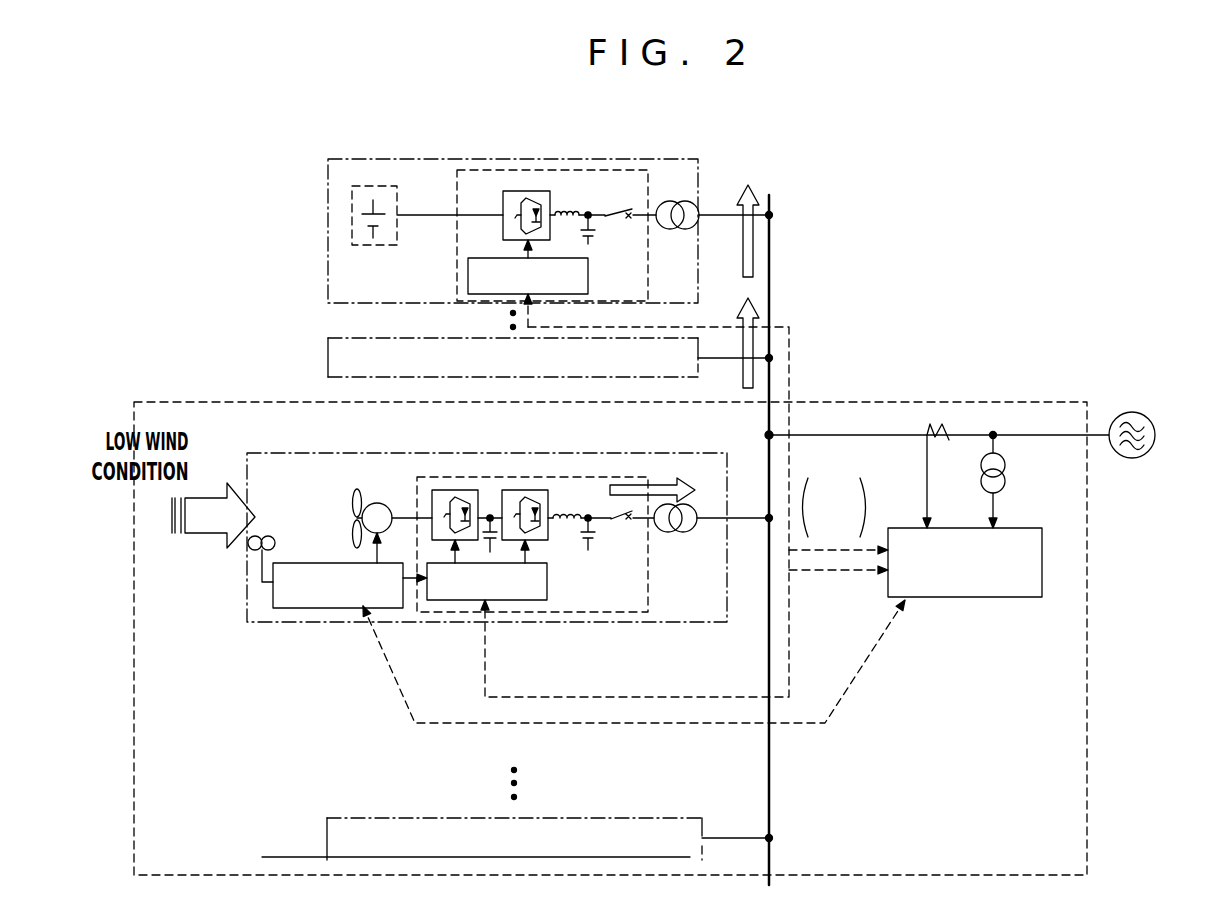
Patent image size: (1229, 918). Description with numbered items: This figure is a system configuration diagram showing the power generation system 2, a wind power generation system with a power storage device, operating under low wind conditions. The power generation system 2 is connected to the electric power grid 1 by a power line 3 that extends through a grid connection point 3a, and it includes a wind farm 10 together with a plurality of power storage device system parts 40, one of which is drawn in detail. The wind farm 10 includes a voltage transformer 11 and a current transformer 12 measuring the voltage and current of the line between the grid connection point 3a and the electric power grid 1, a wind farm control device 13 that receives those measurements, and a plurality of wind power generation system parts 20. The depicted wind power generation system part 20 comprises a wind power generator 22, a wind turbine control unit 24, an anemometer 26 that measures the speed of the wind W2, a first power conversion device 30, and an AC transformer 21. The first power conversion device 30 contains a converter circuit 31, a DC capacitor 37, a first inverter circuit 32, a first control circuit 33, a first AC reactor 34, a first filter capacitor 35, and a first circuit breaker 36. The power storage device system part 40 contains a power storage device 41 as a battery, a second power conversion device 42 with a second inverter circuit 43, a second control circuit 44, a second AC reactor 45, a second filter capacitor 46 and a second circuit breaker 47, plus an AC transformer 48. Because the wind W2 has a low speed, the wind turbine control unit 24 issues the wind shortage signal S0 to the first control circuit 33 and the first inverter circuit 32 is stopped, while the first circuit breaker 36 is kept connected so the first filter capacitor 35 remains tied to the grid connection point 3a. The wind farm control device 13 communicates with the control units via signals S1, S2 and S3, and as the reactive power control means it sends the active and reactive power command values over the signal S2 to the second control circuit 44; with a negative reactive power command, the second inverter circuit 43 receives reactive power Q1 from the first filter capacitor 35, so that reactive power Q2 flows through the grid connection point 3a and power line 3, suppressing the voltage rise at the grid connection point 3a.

The electric power grid 1 is at (1156, 437).
The power generation system 2 is at (1049, 208).
The power line 3 is at (771, 372).
The grid connection point 3a is at (773, 432).
The wind farm 10 is at (1089, 614).
The voltage transformer 11 is at (1006, 464).
The current transformer 12 is at (949, 440).
The wind farm control device 13 is at (962, 598).
The wind power generation system part 20 is at (289, 624).
The AC transformer 21 is at (680, 533).
The wind power generator 22 is at (378, 502).
The wind turbine control unit 24 is at (338, 609).
The anemometer 26 is at (271, 535).
The first power conversion device 30 is at (548, 613).
The converter circuit 31 is at (455, 490).
The first inverter circuit 32 is at (526, 490).
The first control circuit 33 is at (450, 601).
The first AC reactor 34 is at (566, 510).
The first filter capacitor 35 is at (584, 547).
The first circuit breaker 36 is at (618, 524).
The DC capacitor 37 is at (491, 512).
The power storage device system part 40 is at (328, 207).
The power storage device 41 is at (378, 186).
The second power conversion device 42 is at (457, 190).
The second inverter circuit 43 is at (526, 191).
The second control circuit 44 is at (468, 276).
The second AC reactor 45 is at (568, 211).
The second filter capacitor 46 is at (592, 211).
The second circuit breaker 47 is at (626, 222).
The AC transformer 48 is at (675, 201).
The reactive power Q1 is at (662, 483).
The reactive power Q2 is at (771, 242).
The wind shortage signal S0 is at (406, 588).
The communication signal S1 is at (838, 605).
The communication signal S2 is at (838, 498).
The communication signal S3 is at (634, 661).
The wind W2 is at (200, 535).